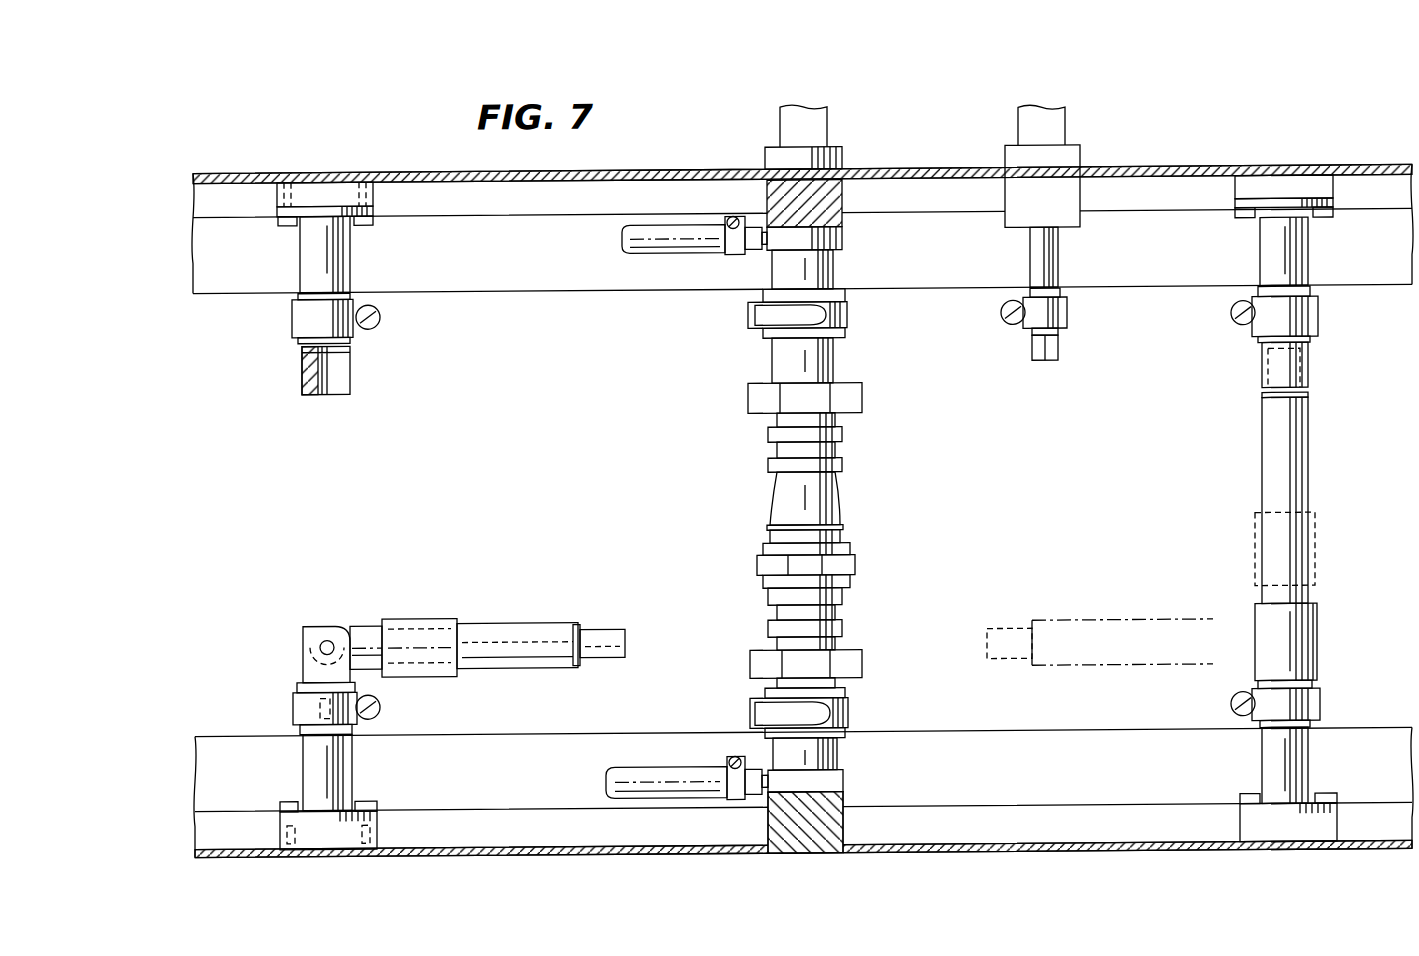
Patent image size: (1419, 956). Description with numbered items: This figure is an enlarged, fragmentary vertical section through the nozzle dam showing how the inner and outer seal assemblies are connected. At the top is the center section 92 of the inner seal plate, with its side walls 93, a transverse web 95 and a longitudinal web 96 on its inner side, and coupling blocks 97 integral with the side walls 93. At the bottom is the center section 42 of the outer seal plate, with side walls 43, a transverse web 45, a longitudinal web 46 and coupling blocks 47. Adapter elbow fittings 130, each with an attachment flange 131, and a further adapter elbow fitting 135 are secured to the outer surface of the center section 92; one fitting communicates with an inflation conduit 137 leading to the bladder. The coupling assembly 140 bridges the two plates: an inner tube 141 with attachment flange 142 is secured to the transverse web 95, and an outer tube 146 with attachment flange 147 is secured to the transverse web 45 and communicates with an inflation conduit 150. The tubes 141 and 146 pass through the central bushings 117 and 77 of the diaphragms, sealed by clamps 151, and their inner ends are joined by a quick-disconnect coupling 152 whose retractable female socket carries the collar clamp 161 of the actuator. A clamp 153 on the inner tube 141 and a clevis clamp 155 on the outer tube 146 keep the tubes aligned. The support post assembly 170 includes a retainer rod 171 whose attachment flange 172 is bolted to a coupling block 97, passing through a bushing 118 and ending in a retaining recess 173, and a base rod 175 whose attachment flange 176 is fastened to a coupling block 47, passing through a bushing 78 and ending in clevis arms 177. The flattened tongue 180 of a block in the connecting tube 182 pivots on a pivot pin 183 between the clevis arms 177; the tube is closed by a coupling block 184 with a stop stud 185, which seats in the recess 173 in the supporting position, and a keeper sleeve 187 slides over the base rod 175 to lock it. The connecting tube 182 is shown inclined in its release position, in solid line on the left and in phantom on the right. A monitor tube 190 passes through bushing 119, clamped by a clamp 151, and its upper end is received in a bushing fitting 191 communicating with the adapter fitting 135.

The center section 42 is at (985, 851).
The side walls 43 is at (997, 743).
The transverse web 45 is at (835, 825).
The longitudinal web 46 is at (1090, 810).
The coupling blocks 47 is at (380, 828).
The central bushing 77 is at (845, 690).
The bushings 78 is at (297, 729).
The center section 92 is at (667, 171).
The side walls 93 is at (495, 272).
The transverse web 95 is at (830, 198).
The longitudinal web 96 is at (502, 196).
The coupling blocks 97 is at (323, 186).
The central tubular bushing 117 is at (845, 335).
The surrounding bushings 118 is at (295, 334).
The bushing 119 is at (1060, 329).
The adapter elbow fittings 130 is at (815, 124).
The attachment flange 131 is at (843, 155).
The adapter elbow fitting 135 is at (1050, 127).
The inflation conduit 137 is at (645, 245).
The coupling assembly 140 is at (890, 533).
The inner tube 141 is at (793, 356).
The attachment flange 142 is at (843, 243).
The outer tube 146 is at (825, 762).
The attachment flange 147 is at (838, 783).
The inflation conduit 150 is at (647, 772).
The clamps 151 is at (848, 312).
The quick-disconnect coupling 152 is at (765, 532).
The clamp 153 is at (862, 400).
The clevis clamp 155 is at (853, 663).
The collar clamp 161 is at (843, 565).
The support post assembly 170 is at (512, 528).
The retainer rod 171 is at (320, 249).
The attachment flange 172 is at (1335, 204).
The retaining recess 173 is at (333, 376).
The base rod 175 is at (337, 778).
The attachment flange 176 is at (298, 816).
The clevis arms 177 is at (340, 634).
The flattened tongue 180 is at (347, 623).
The connecting tube 182 is at (1278, 479).
The pivot pin 183 is at (320, 644).
The coupling block 184 is at (578, 621).
The stop stud 185 is at (1262, 369).
The keeper sleeve 187 is at (1318, 634).
The monitor tube 190 is at (1043, 267).
The bushing fitting 191 is at (1063, 214).